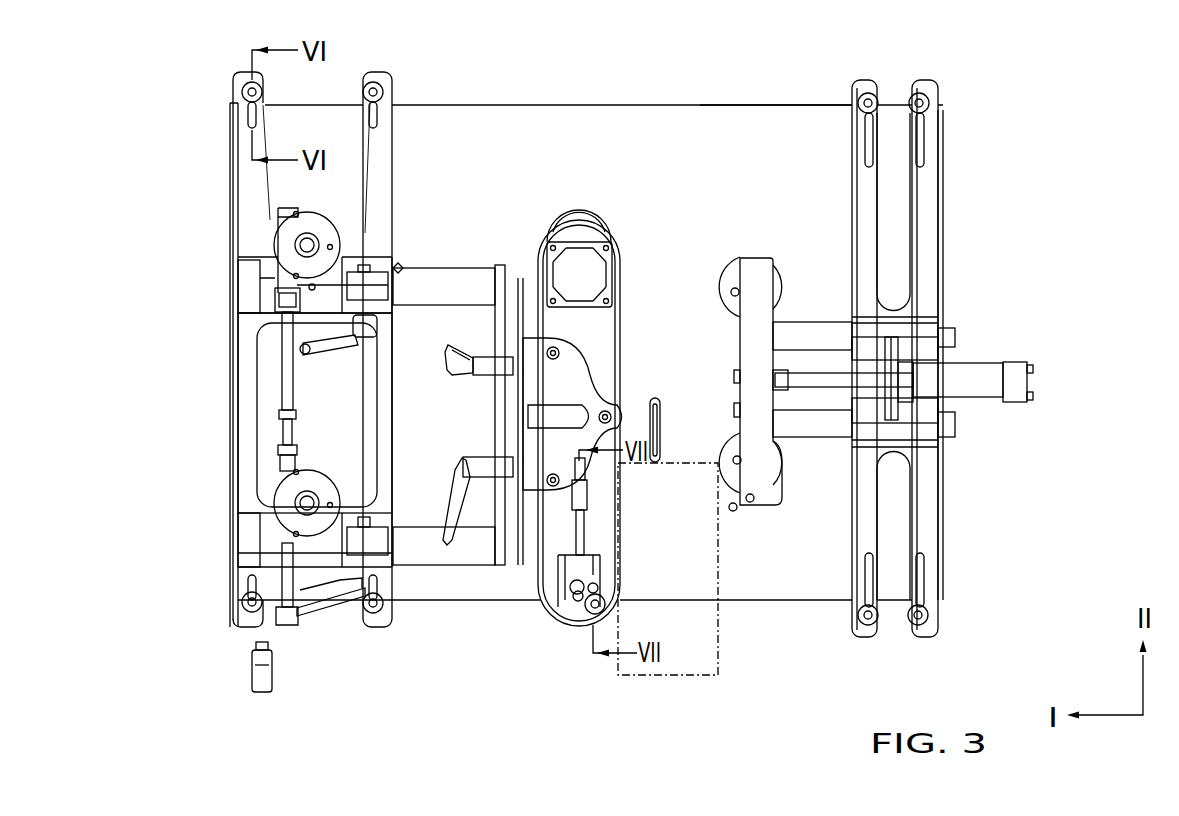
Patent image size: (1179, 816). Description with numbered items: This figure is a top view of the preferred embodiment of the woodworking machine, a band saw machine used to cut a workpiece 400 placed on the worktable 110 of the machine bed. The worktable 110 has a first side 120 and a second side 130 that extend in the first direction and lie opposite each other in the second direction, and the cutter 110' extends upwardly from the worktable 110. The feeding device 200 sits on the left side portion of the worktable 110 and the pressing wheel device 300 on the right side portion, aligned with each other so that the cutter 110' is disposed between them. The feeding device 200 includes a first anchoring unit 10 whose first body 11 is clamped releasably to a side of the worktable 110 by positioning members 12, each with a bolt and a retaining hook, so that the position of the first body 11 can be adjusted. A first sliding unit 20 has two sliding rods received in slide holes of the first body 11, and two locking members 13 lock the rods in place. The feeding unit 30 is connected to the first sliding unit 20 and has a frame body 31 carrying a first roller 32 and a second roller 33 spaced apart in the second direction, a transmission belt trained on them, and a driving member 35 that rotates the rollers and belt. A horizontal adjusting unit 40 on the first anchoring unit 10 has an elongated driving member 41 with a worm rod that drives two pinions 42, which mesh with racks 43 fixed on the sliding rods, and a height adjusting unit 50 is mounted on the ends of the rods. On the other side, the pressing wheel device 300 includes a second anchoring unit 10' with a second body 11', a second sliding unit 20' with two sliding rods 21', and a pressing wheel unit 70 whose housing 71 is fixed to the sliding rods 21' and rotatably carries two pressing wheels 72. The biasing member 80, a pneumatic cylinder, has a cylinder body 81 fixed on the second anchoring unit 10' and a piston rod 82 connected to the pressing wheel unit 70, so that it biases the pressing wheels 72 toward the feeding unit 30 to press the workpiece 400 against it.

The first anchoring unit 10 is at (253, 365).
The first body 11 is at (191, 349).
The positioning member 12 is at (247, 74).
The locking member 13 is at (330, 612).
The first sliding unit 20 is at (458, 306).
The sliding rod 21' is at (895, 395).
The second sliding unit 20' is at (912, 416).
The second anchoring unit 10' is at (967, 355).
The second body 11' is at (942, 358).
The feeding unit 30 is at (562, 632).
The frame body 31 is at (545, 565).
The first roller 32 is at (580, 224).
The second roller 33 is at (553, 595).
The driving member 35 is at (600, 272).
The horizontal adjusting unit 40 is at (275, 525).
The elongated driving member 41 is at (287, 373).
The pinion 42 is at (285, 244).
The rack 43 is at (397, 270).
The height adjusting unit 50 is at (504, 350).
The pressing wheel unit 70 is at (768, 514).
The housing 71 is at (800, 447).
The pressing wheel 72 is at (728, 278).
The biasing member 80 is at (1040, 355).
The cylinder body 81 is at (973, 370).
The piston rod 82 is at (808, 377).
The worktable 110 is at (776, 70).
The cutter 110' is at (657, 373).
The first side 120 is at (412, 602).
The second side 130 is at (673, 107).
The feeding device 200 is at (378, 66).
The pressing wheel device 300 is at (946, 80).
The workpiece 400 is at (718, 647).